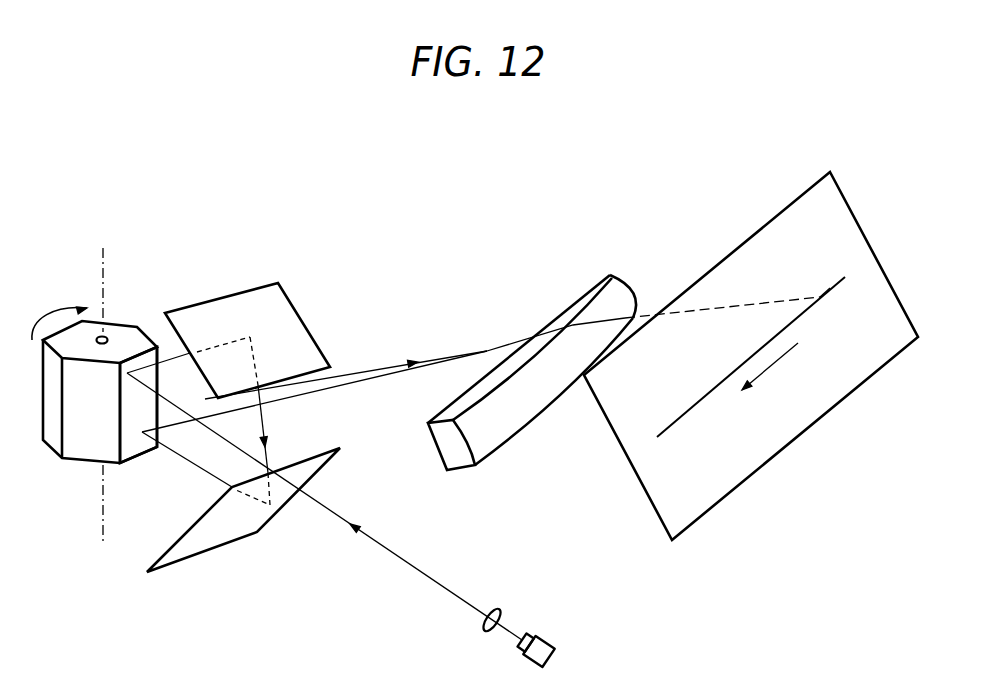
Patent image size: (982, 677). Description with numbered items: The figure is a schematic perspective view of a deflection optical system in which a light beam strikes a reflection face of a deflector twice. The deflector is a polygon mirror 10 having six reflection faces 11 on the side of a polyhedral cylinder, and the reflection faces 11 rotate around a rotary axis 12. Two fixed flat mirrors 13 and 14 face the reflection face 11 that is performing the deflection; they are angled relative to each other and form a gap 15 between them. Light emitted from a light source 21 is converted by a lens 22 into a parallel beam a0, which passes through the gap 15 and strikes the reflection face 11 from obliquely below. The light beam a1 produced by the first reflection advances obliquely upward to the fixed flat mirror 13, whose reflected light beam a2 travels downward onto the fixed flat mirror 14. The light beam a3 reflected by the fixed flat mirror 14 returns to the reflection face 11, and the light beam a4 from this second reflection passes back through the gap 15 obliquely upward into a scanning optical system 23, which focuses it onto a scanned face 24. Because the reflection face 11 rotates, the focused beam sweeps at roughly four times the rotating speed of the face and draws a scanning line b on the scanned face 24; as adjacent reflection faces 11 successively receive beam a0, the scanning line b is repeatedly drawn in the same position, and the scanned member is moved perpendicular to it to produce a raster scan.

The polygon mirror 10 is at (120, 330).
The reflection face 11 is at (133, 458).
The rotary axis 12 is at (104, 262).
The fixed flat mirror 13 is at (228, 297).
The fixed flat mirror 14 is at (230, 545).
The gap 15 is at (357, 443).
The light source 21 is at (540, 637).
The lens 22 is at (505, 608).
The scanning optical system 23 is at (460, 470).
The scanned face 24 is at (795, 430).
The parallel beam a0 is at (420, 572).
The light beam a1 is at (172, 357).
The light beam a2 is at (263, 418).
The light beam a3 is at (190, 463).
The light beam a4 is at (377, 369).
The scanning line b is at (828, 286).